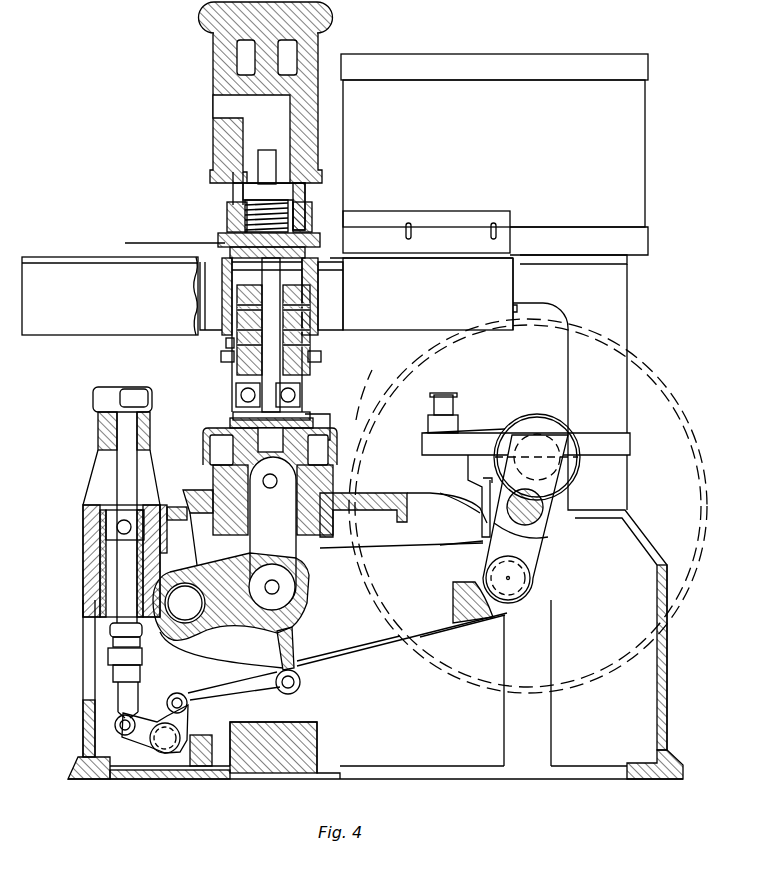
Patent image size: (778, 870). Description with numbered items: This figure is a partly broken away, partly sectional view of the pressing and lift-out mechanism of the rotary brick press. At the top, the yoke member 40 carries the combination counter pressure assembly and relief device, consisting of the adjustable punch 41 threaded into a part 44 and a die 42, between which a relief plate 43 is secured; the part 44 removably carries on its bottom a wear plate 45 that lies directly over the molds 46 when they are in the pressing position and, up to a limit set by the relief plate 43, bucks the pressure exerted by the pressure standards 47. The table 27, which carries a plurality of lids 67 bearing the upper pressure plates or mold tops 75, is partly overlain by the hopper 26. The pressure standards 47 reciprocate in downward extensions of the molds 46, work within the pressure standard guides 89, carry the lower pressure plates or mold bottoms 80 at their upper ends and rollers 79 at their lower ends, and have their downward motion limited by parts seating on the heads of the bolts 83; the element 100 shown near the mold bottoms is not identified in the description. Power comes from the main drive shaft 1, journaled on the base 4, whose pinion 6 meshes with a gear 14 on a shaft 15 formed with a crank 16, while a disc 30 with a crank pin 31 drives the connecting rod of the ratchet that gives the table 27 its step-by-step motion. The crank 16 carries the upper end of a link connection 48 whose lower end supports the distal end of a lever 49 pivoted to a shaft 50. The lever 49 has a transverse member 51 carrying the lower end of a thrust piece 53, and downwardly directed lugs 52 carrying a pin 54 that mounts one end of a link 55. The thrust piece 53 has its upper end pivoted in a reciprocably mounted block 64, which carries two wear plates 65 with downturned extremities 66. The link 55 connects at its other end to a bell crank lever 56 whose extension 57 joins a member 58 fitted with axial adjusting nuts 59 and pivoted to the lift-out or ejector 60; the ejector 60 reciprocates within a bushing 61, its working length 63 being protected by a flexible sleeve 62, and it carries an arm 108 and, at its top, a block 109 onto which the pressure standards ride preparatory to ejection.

The main drive shaft 1 is at (352, 400).
The base 4 is at (668, 668).
The pinion 6 is at (318, 400).
The gear 14 is at (685, 418).
The shaft 15 is at (545, 505).
The crank 16 is at (560, 478).
The hopper 26 is at (636, 200).
The table 27 is at (60, 257).
The disc 30 is at (482, 432).
The crank pin 31 is at (456, 405).
The yoke member 40 is at (312, 55).
The adjustable punch 41 is at (245, 190).
The die 42 is at (240, 183).
The relief plate 43 is at (262, 175).
The part 44 is at (232, 238).
The wear plate 45 is at (125, 243).
The molds 46 is at (323, 243).
The pressure standards 47 is at (235, 380).
The link connection 48 is at (530, 553).
The lever 49 is at (375, 647).
The shaft 50 is at (185, 620).
The transverse member 51 is at (280, 588).
The downwardly directed lugs 52 is at (325, 668).
The thrust piece 53 is at (273, 533).
The pin 54 is at (300, 683).
The link 55 is at (240, 698).
The bell crank lever 56 is at (150, 720).
The extension 57 is at (140, 750).
The member 58 is at (118, 693).
The axial adjusting nuts 59 is at (128, 640).
The lift-out or ejector 60 is at (117, 470).
The bushing 61 is at (115, 630).
The flexible sleeve 62 is at (160, 490).
The working length 63 is at (98, 475).
The reciprocably mounted block 64 is at (232, 425).
The wear plates 65 is at (236, 414).
The downturned extremities 66 is at (312, 416).
The lids 67 is at (322, 248).
The upper pressure plates or mold tops 75 is at (238, 268).
The rollers 79 is at (236, 396).
The lower pressure plates or mold bottoms 80 is at (335, 280).
The bolts 83 is at (222, 358).
The pressure standard guides 89 is at (228, 344).
The block 100 is at (332, 300).
The arm 108 is at (98, 425).
The block 109 is at (100, 398).